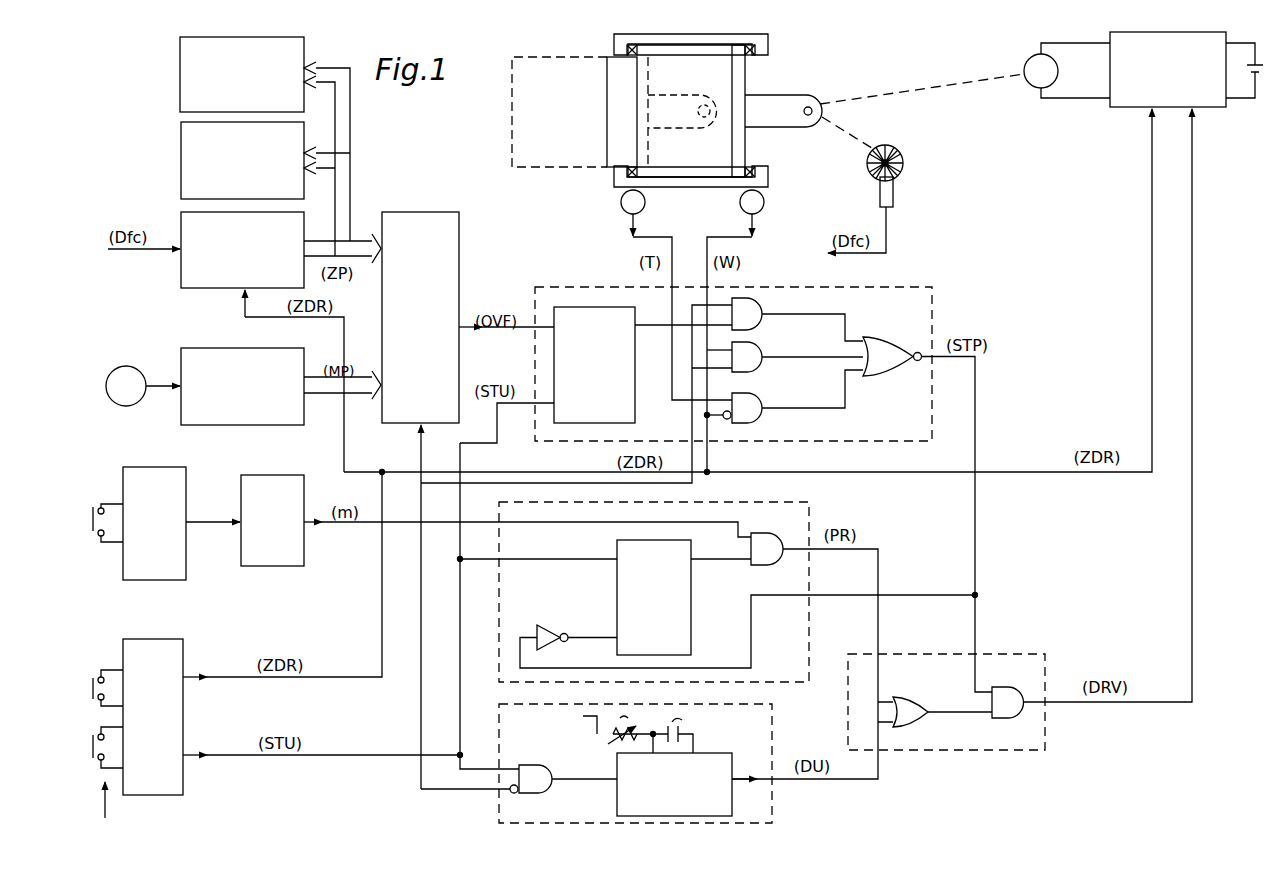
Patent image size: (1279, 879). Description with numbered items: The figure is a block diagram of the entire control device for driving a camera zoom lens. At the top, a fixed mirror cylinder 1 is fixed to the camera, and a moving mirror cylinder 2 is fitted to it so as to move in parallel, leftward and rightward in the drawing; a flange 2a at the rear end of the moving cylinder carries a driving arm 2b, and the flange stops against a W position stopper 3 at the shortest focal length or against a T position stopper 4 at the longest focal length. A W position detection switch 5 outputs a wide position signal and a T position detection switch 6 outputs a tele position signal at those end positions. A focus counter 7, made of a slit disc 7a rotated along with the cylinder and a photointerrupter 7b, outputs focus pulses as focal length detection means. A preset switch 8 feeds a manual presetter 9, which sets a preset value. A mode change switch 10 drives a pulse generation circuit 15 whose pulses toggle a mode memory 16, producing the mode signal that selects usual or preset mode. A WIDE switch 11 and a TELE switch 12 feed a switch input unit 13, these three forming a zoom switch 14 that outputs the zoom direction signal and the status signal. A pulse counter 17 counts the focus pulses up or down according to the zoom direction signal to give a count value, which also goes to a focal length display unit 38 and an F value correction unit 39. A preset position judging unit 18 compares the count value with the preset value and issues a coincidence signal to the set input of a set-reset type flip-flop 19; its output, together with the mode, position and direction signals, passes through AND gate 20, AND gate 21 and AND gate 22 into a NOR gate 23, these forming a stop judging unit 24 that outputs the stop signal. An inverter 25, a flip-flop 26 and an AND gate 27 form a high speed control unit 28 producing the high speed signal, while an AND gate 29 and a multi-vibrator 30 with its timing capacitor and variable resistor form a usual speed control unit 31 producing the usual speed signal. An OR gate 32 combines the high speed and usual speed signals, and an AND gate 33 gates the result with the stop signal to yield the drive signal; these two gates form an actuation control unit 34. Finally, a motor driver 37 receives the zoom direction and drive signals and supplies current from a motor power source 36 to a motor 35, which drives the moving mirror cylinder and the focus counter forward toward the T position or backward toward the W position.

The fixed mirror cylinder 1 is at (700, 34).
The moving mirror cylinder 2 is at (607, 114).
The flange 2a is at (748, 82).
The driving arm 2b is at (810, 104).
The W position stopper 3 is at (755, 62).
The T position stopper 4 is at (612, 63).
The W position detection switch 5 is at (764, 208).
The T position detection switch 6 is at (622, 208).
The focus counter 7 is at (917, 186).
The slit disc 7a is at (903, 156).
The photointerrupter 7b is at (893, 200).
The preset switch 8 is at (114, 398).
The manual presetter 9 is at (181, 414).
The mode change switch 10 is at (100, 540).
The WIDE switch 11 is at (97, 676).
The TELE switch 12 is at (100, 762).
The switch input unit 13 is at (183, 648).
The zoom switch 14 is at (107, 813).
The pulse generation circuit 15 is at (148, 580).
The mode memory 16 is at (275, 568).
The pulse counter 17 is at (181, 272).
The preset position judging unit 18 is at (430, 212).
The set-reset type flip-flop 19 is at (635, 400).
The AND gate 20 is at (758, 300).
The AND gate 21 is at (762, 350).
The AND gate 22 is at (760, 396).
The NOR gate 23 is at (889, 337).
The stop judging unit 24 is at (770, 364).
The inverter 25 is at (548, 630).
The flip-flop 26 is at (692, 597).
The AND gate 27 is at (774, 534).
The high speed control unit 28 is at (737, 587).
The AND gate 29 is at (540, 766).
The multi-vibrator 30 is at (718, 753).
The usual speed control unit 31 is at (622, 763).
The OR gate 32 is at (912, 697).
The AND gate 33 is at (1012, 688).
The actuation control unit 34 is at (959, 672).
The motor 35 is at (1036, 88).
The motor power source 36 is at (1265, 78).
The motor driver 37 is at (1125, 107).
The focal length display unit 38 is at (180, 74).
The F value correction unit 39 is at (181, 162).